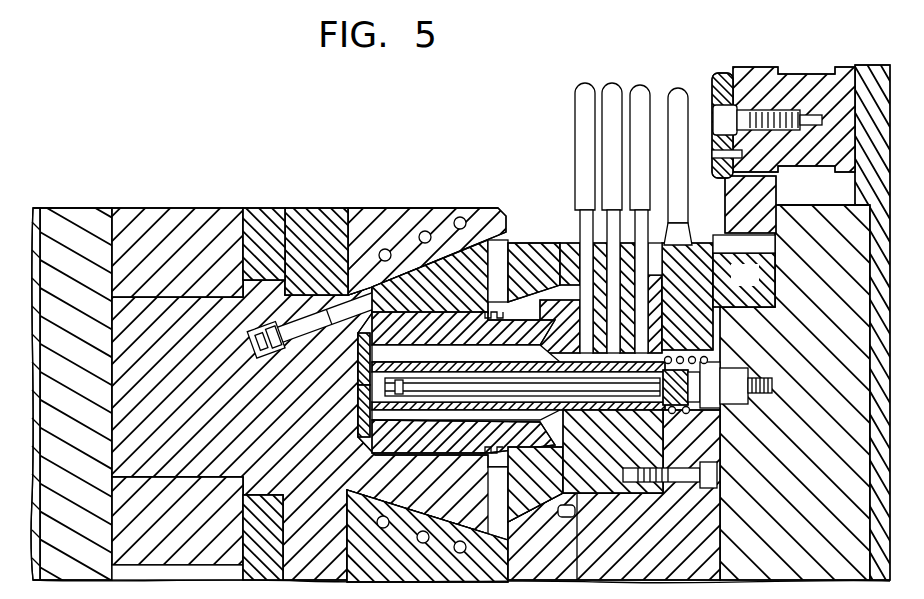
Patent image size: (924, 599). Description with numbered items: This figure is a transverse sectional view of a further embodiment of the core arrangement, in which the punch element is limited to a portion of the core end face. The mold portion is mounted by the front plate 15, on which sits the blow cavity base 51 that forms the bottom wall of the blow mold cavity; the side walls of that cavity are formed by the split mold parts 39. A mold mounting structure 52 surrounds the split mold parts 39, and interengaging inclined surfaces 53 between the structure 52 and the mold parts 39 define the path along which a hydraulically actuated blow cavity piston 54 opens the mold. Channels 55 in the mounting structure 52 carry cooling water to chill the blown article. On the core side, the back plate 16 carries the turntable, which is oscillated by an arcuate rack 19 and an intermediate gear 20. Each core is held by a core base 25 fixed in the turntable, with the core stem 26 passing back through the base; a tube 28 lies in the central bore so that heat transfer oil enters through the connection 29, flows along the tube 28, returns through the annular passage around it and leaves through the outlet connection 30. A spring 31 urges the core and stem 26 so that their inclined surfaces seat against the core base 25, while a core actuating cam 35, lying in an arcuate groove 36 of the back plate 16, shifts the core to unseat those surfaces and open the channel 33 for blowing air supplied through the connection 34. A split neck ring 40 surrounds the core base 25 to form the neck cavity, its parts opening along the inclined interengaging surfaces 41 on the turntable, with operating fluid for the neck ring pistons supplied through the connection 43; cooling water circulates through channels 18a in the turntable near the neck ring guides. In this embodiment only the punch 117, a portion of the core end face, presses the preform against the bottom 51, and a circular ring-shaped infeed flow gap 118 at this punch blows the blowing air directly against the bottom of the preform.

The front plate 15 is at (88, 208).
The blow cavity base 51 is at (158, 386).
The mold mounting structure 52 is at (395, 208).
The interengaging inclined surfaces 53 is at (433, 255).
The blow cavity piston 54 is at (308, 318).
The channels 55 is at (383, 249).
The split mold parts 39 is at (467, 262).
The inclined interengaging surfaces 41 is at (519, 250).
The channels 18a is at (566, 262).
The split neck ring 40 is at (522, 308).
The channel 33 is at (548, 358).
The tube 28 is at (513, 398).
The stem 26 is at (570, 408).
The core base 25 is at (609, 459).
The spring 31 is at (679, 412).
The arcuate groove 36 is at (728, 366).
The core actuating cam 35 is at (750, 382).
The back plate 16 is at (772, 509).
The arcuate rack 19 is at (734, 287).
The intermediate gear 20 is at (762, 200).
The connection 34 is at (576, 95).
The outlet connection 30 is at (613, 96).
The connection 29 is at (640, 92).
The connection 43 is at (680, 94).
The punch 117 is at (366, 366).
The infeed flow gap 118 is at (364, 410).